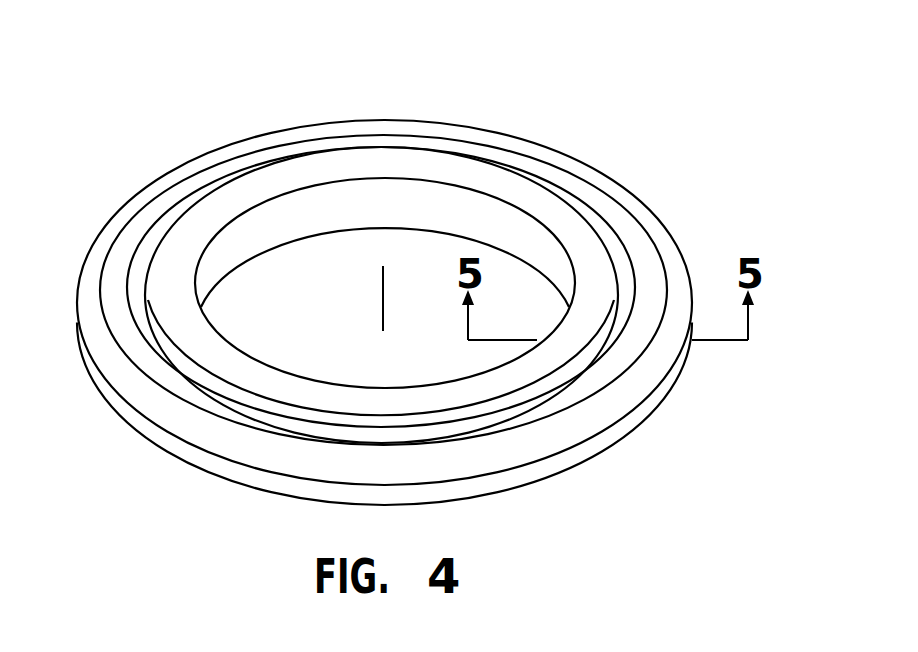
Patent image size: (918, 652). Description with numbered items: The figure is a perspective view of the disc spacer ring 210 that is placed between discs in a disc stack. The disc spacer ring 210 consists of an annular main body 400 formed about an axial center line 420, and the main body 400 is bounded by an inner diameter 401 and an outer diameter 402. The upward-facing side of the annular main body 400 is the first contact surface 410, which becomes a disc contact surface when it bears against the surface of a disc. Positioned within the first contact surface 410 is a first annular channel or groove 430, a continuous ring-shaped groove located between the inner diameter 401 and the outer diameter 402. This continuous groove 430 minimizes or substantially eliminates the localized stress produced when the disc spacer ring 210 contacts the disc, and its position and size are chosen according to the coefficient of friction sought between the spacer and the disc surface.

The disc spacer ring 210 is at (524, 97).
The annular main body 400 is at (631, 218).
The inner diameter 401 is at (216, 268).
The outer diameter 402 is at (109, 392).
The first contact surface 410 is at (352, 165).
The axial center line 420 is at (381, 286).
The first annular channel or groove 430 is at (542, 178).